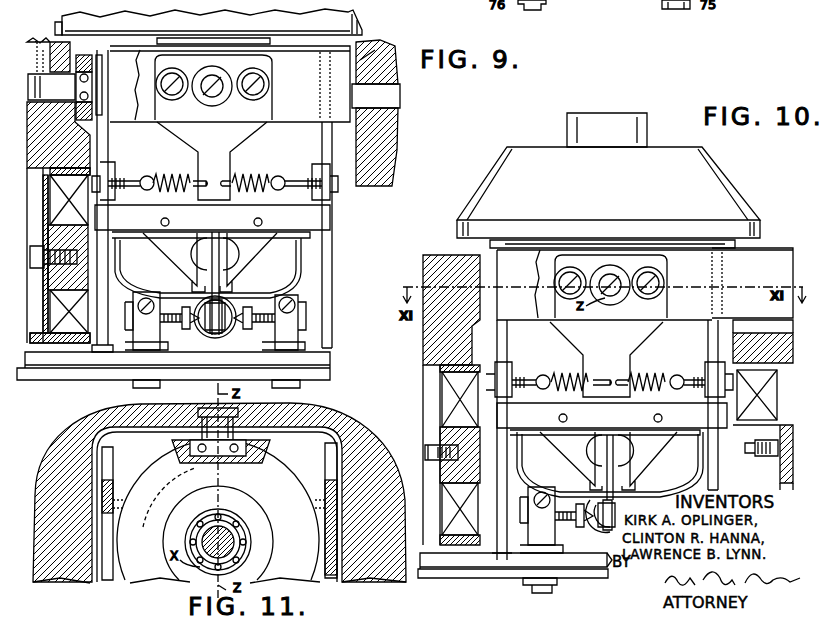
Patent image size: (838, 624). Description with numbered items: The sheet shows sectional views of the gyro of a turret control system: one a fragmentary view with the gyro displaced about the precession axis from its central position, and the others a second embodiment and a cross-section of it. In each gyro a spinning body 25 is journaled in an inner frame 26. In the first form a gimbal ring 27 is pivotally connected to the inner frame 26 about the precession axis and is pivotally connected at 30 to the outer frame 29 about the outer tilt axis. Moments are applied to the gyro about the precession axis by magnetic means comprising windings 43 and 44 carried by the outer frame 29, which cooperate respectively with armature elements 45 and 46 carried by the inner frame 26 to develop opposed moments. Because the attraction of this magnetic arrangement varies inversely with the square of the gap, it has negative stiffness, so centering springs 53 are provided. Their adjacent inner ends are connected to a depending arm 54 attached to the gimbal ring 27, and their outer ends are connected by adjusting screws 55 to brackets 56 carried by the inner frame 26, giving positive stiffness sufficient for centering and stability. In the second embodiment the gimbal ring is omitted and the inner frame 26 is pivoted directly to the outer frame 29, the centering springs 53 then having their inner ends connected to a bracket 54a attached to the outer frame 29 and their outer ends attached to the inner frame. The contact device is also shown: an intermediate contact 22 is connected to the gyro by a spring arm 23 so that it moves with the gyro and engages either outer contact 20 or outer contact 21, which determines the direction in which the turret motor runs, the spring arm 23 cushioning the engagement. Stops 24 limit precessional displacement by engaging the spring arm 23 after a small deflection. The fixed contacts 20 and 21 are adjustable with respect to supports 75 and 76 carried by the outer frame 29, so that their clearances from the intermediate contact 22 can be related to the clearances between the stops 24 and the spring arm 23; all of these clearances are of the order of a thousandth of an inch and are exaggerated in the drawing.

In FIG. 9, the outer contact 20 is at (195, 352).
In FIG. 10, the outer contact 20 is at (556, 520).
In FIG. 9, the outer contact 21 is at (232, 324).
In FIG. 9, the intermediate contact 22 is at (211, 330).
In FIG. 9, the spring arm 23 is at (225, 255).
In FIG. 10, the spring arm 23 is at (596, 435).
In FIG. 9, the stops 24 is at (190, 290).
In FIG. 10, the stops 24 is at (588, 480).
In FIG. 9, the spinning body 25 is at (68, 30).
In FIG. 10, the spinning body 25 is at (500, 180).
In FIG. 9, the inner frame 26 is at (208, 268).
In FIG. 11, the inner frame 26 is at (146, 562).
In FIG. 10, the inner frame 26 is at (533, 473).
In FIG. 9, the gimbal ring 27 is at (338, 60).
In FIG. 9, the outer frame 29 is at (385, 105).
In FIG. 11, the outer frame 29 is at (363, 449).
In FIG. 10, the outer frame 29 is at (440, 256).
In FIG. 9, the pivotal connection 30 is at (88, 106).
In FIG. 9, the winding 43 is at (72, 208).
In FIG. 10, the winding 43 is at (445, 398).
In FIG. 10, the winding 44 is at (752, 372).
In FIG. 9, the armature element 45 is at (105, 328).
In FIG. 11, the armature element 45 is at (110, 573).
In FIG. 10, the armature element 45 is at (517, 487).
In FIG. 9, the armature element 46 is at (330, 305).
In FIG. 11, the armature element 46 is at (333, 577).
In FIG. 10, the armature element 46 is at (722, 462).
In FIG. 9, the centering springs 53 is at (165, 176).
In FIG. 10, the centering springs 53 is at (567, 372).
In FIG. 9, the depending arm 54 is at (245, 132).
In FIG. 10, the bracket 54a is at (633, 336).
In FIG. 9, the adjusting screws 55 is at (130, 181).
In FIG. 10, the adjusting screws 55 is at (522, 392).
In FIG. 9, the brackets 56 is at (112, 168).
In FIG. 10, the brackets 56 is at (510, 366).
In FIG. 9, the support 75 is at (138, 358).
In FIG. 10, the support 75 is at (538, 535).
In FIG. 9, the support 76 is at (292, 333).